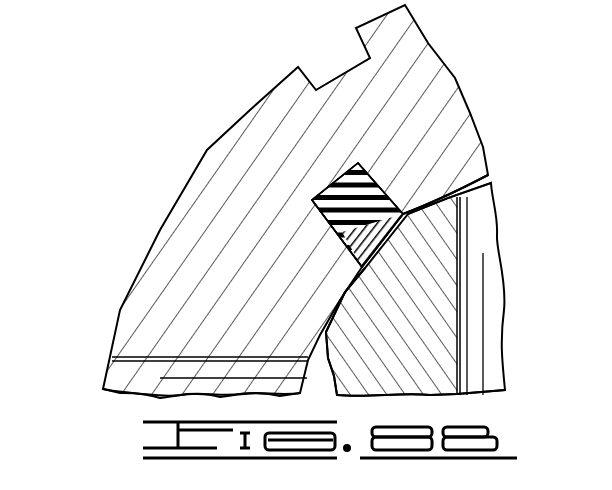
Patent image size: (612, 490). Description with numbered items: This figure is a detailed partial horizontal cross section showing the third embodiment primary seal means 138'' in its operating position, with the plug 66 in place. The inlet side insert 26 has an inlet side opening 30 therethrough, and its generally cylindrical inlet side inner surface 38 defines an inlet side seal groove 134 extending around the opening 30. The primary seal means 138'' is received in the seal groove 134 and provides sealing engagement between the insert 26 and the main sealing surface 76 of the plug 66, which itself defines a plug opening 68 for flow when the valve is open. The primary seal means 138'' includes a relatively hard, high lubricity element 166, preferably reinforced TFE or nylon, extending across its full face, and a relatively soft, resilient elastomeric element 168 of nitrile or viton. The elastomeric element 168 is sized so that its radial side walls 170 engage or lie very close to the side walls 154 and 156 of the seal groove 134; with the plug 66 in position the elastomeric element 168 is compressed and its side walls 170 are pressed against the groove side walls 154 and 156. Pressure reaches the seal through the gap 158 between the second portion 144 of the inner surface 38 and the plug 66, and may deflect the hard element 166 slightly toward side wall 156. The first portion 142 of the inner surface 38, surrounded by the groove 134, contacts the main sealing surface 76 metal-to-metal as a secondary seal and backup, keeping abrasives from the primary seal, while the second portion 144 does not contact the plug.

The inlet side insert 26 is at (255, 118).
The inlet side opening 30 is at (160, 358).
The main sealing surface 76 is at (330, 316).
The inlet side inner surface 38 is at (440, 212).
The gap 158 is at (450, 198).
The plug opening 68 is at (462, 330).
The primary seal means 138'' is at (521, 324).
The plug 66 is at (505, 390).
The first portion 142 is at (337, 390).
The second portion 144 is at (489, 175).
The hard element 166 is at (398, 258).
The inlet side seal groove 134 is at (356, 164).
The side wall 154 is at (365, 162).
The side walls 170 is at (370, 178).
The elastomeric element 168 is at (316, 196).
The side wall 156 is at (325, 214).